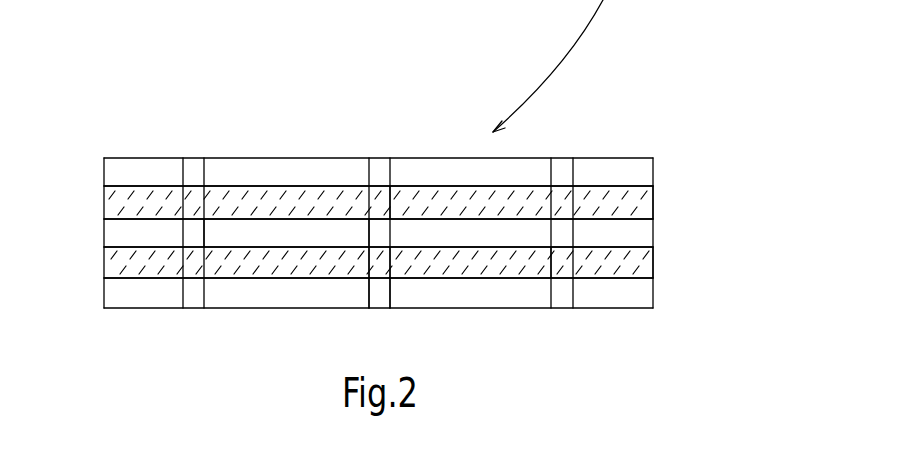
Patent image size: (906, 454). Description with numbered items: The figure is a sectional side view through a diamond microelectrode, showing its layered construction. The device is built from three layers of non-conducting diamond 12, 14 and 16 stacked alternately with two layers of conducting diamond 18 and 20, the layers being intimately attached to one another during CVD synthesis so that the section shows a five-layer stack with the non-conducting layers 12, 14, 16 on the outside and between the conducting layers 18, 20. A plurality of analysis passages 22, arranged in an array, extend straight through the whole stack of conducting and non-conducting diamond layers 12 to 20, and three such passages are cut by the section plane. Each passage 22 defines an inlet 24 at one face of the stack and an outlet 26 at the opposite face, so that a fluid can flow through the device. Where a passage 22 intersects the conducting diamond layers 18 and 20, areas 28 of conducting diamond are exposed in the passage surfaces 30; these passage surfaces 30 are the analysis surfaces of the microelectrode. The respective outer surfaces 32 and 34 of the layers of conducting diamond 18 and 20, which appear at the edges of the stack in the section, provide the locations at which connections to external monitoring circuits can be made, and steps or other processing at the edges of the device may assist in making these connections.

The layer of non-conducting diamond 12 is at (654, 174).
The layer of non-conducting diamond 14 is at (654, 234).
The layer of non-conducting diamond 16 is at (654, 291).
The layer of conducting diamond 18 is at (103, 203).
The layer of conducting diamond 20 is at (103, 264).
The analysis passage 22 is at (193, 158).
The inlet 24 is at (379, 158).
The outlet 26 is at (377, 309).
The area of conducting diamond 28 is at (393, 200).
The passage surface 30 is at (203, 231).
The outer surface of conducting diamond layer 32 is at (658, 200).
The outer surface of conducting diamond layer 34 is at (658, 263).